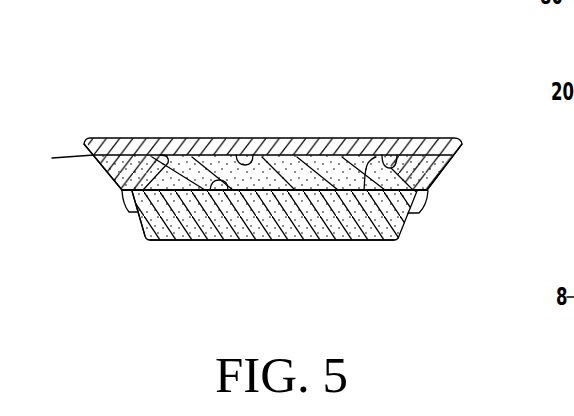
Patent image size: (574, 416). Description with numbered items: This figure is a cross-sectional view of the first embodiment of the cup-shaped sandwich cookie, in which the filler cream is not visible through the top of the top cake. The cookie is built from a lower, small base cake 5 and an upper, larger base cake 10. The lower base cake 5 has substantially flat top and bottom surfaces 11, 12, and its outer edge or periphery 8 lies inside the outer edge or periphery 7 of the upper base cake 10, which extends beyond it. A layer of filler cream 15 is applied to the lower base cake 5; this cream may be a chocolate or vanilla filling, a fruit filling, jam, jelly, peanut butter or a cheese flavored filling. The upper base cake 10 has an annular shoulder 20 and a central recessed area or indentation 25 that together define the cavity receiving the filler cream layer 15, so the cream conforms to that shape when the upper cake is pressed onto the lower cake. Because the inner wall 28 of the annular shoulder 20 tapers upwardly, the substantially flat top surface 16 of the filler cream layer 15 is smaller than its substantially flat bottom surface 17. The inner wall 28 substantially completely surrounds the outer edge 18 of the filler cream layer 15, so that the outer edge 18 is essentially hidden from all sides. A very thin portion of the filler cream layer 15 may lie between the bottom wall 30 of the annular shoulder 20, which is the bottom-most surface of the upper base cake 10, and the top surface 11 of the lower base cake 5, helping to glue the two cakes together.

The upper base cake 10 is at (107, 138).
The top surface of lower base cake 11 is at (327, 155).
The filler cream layer 15 is at (282, 165).
The top surface of filler cream layer 16 is at (240, 150).
The inner wall of annular shoulder 28 is at (163, 138).
The outer edge of filler cream layer 18 is at (59, 162).
The outer edge of upper base cake 7 is at (117, 185).
The annular shoulder 20 is at (448, 167).
The bottom surface of lower base cake 12 is at (290, 240).
The bottom wall of annular shoulder 30 is at (130, 207).
The outer edge of lower base cake 8 is at (131, 227).
The lower base cake 5 is at (157, 242).
The bottom surface of filler cream layer 17 is at (213, 190).
The central recessed area 25 is at (364, 190).